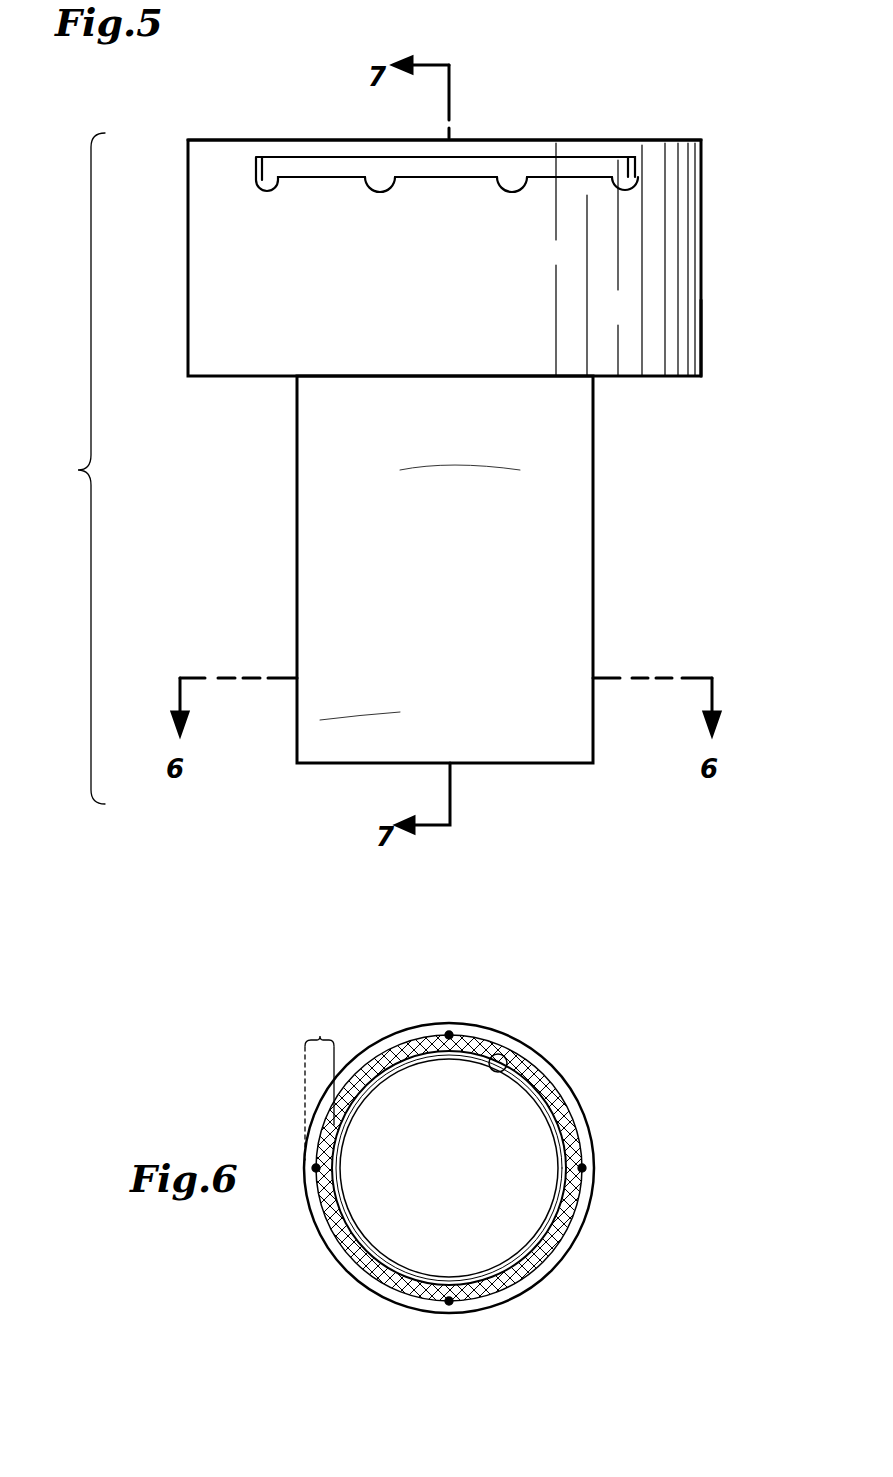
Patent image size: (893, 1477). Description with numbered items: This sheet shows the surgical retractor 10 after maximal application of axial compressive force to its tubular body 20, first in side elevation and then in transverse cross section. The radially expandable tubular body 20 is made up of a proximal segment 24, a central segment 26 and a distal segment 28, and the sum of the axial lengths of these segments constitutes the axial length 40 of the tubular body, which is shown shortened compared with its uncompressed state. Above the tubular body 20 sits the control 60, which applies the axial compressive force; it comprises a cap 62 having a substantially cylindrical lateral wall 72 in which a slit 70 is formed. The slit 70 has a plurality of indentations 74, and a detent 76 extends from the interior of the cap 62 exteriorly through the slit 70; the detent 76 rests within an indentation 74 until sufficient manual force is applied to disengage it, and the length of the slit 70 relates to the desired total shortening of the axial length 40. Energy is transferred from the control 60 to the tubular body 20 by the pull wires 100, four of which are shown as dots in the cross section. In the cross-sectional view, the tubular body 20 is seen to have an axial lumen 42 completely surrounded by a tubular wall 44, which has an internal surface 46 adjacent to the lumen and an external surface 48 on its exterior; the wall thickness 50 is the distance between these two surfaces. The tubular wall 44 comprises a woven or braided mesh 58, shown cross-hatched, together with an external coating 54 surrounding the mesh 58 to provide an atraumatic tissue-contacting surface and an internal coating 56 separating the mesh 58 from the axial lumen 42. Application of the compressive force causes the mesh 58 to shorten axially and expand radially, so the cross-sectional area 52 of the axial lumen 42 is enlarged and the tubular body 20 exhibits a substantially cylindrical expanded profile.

In FIG. 5, the surgical retractor 10 is at (648, 120).
In FIG. 5, the tubular body 20 is at (595, 556).
In FIG. 5, the proximal segment 24 is at (380, 393).
In FIG. 5, the central segment 26 is at (470, 470).
In FIG. 5, the distal segment 28 is at (410, 710).
In FIG. 5, the axial length of the tubular body 40 is at (67, 468).
In FIG. 6, the axial lumen 42 is at (350, 1212).
In FIG. 6, the tubular wall 44 is at (592, 1216).
In FIG. 6, the internal surface 46 is at (497, 1054).
In FIG. 6, the external surface 48 is at (562, 1080).
In FIG. 6, the wall thickness 50 is at (321, 1082).
In FIG. 6, the cross-sectional area 52 is at (528, 1142).
In FIG. 6, the external coating 54 is at (387, 1302).
In FIG. 6, the internal coating 56 is at (535, 1283).
In FIG. 6, the mesh 58 is at (352, 1280).
In FIG. 5, the control 60 is at (703, 176).
In FIG. 5, the cap 62 is at (703, 327).
In FIG. 5, the slit 70 is at (483, 165).
In FIG. 5, the lateral wall 72 is at (202, 307).
In FIG. 5, the indentation 74 is at (630, 186).
In FIG. 5, the detent 76 is at (385, 184).
In FIG. 6, the pull wires 100 is at (449, 1306).